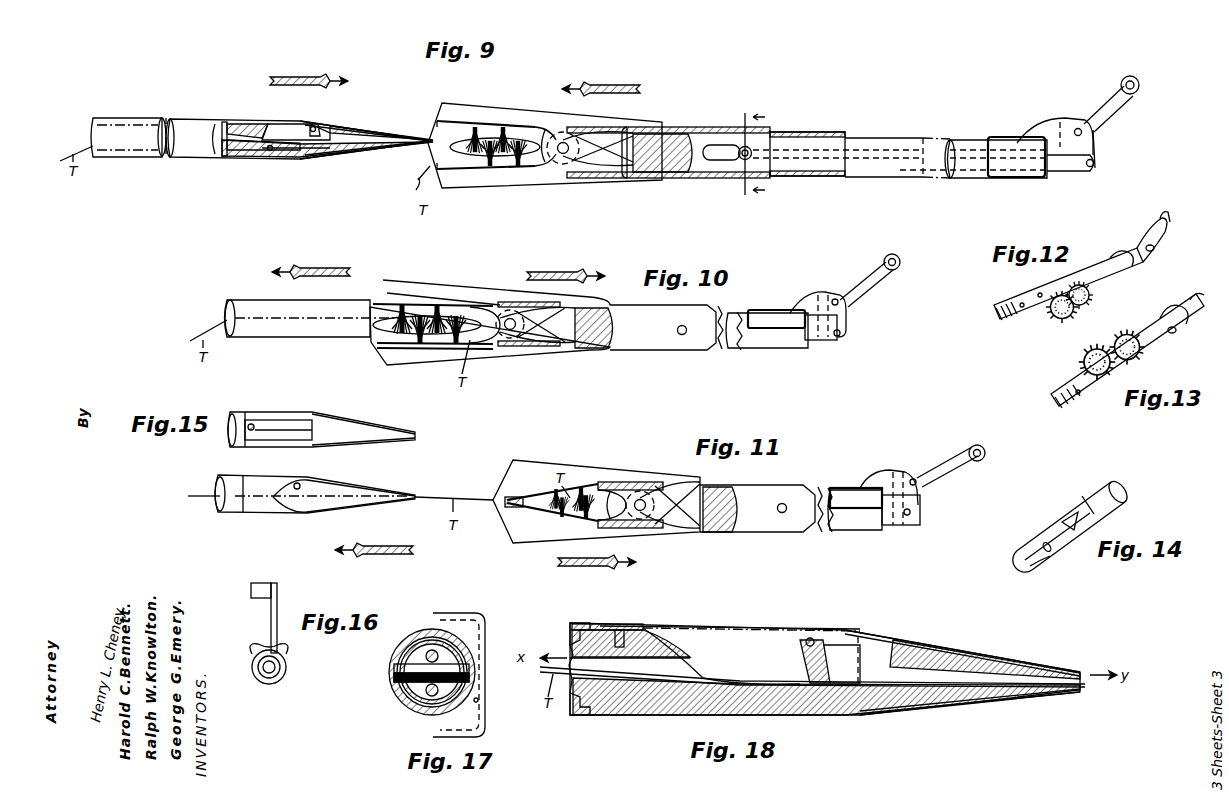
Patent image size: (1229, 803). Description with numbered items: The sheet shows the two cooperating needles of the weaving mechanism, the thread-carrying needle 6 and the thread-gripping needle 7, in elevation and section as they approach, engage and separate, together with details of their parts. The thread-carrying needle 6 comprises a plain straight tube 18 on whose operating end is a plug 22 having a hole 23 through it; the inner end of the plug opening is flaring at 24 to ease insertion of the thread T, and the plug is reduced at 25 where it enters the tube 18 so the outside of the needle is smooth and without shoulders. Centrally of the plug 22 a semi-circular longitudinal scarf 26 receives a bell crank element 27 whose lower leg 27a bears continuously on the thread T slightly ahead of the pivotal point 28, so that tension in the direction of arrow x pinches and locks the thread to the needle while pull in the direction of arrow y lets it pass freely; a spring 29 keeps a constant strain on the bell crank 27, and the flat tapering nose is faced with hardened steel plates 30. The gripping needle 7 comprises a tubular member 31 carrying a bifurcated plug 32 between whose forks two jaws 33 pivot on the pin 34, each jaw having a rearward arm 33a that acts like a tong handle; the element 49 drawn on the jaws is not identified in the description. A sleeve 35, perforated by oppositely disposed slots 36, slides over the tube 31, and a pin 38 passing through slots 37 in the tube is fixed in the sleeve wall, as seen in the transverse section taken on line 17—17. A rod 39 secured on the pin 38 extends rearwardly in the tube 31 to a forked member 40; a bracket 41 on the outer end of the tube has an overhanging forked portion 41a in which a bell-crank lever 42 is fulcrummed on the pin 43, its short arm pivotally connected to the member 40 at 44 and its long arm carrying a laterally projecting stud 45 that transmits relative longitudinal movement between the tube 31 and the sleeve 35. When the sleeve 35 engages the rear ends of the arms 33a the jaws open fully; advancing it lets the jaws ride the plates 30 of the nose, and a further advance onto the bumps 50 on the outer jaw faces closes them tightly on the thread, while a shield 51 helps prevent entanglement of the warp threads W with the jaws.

In FIG. 9, the thread-carrying needle 6 is at (179, 127).
In FIG. 9, the gripping needle 7 is at (822, 125).
In FIG. 9, the section line 17 is at (748, 154).
In FIG. 9, the plain straight tube 18 is at (140, 158).
In FIG. 10, the plain straight tube 18 is at (262, 337).
In FIG. 11, the plain straight tube 18 is at (232, 512).
In FIG. 18, the plain straight tube 18 is at (572, 716).
In FIG. 9, the plug 22 is at (292, 158).
In FIG. 11, the plug 22 is at (270, 512).
In FIG. 18, the plug 22 is at (805, 705).
In FIG. 9, the hole 23 is at (252, 125).
In FIG. 18, the hole 23 is at (650, 668).
In FIG. 9, the flaring inner end 24 is at (228, 122).
In FIG. 9, the reduced portion 25 is at (250, 152).
In FIG. 9, the longitudinal scarf 26 is at (300, 128).
In FIG. 18, the longitudinal scarf 26 is at (720, 655).
In FIG. 9, the bell crank element 27 is at (320, 130).
In FIG. 18, the bell crank element 27 is at (800, 650).
In FIG. 18, the lower leg 27a is at (812, 676).
In FIG. 11, the pivotal point 28 is at (299, 483).
In FIG. 18, the pivotal point 28 is at (814, 638).
In FIG. 9, the spring 29 is at (268, 152).
In FIG. 15, the spring 29 is at (290, 420).
In FIG. 18, the spring 29 is at (752, 628).
In FIG. 9, the hardened steel plates 30 is at (375, 127).
In FIG. 15, the hardened steel plates 30 is at (350, 426).
In FIG. 11, the hardened steel plates 30 is at (350, 483).
In FIG. 18, the hardened steel plates 30 is at (880, 634).
In FIG. 9, the tubular member 31 is at (835, 178).
In FIG. 10, the tubular member 31 is at (765, 348).
In FIG. 11, the tubular member 31 is at (745, 490).
In FIG. 16, the tubular member 31 is at (269, 684).
In FIG. 17, the tubular member 31 is at (402, 695).
In FIG. 9, the bifurcated plug 32 is at (652, 173).
In FIG. 10, the bifurcated plug 32 is at (590, 349).
In FIG. 11, the bifurcated plug 32 is at (720, 532).
In FIG. 14, the bifurcated plug 32 is at (1078, 503).
In FIG. 9, the jaws 33 is at (486, 122).
In FIG. 10, the jaws 33 is at (405, 303).
In FIG. 11, the jaws 33 is at (510, 492).
In FIG. 12, the jaws 33 is at (1003, 322).
In FIG. 13, the jaws 33 is at (1052, 401).
In FIG. 9, the arm 33a is at (622, 135).
In FIG. 10, the arm 33a is at (585, 305).
In FIG. 11, the arm 33a is at (685, 480).
In FIG. 12, the arm 33a is at (1168, 226).
In FIG. 13, the arm 33a is at (1186, 298).
In FIG. 9, the pin 34 is at (563, 154).
In FIG. 10, the pin 34 is at (510, 331).
In FIG. 11, the pin 34 is at (640, 499).
In FIG. 9, the sleeve 35 is at (605, 127).
In FIG. 10, the sleeve 35 is at (630, 351).
In FIG. 11, the sleeve 35 is at (640, 528).
In FIG. 17, the sleeve 35 is at (420, 630).
In FIG. 9, the slots 36 is at (640, 134).
In FIG. 9, the slots 37 is at (720, 178).
In FIG. 17, the slots 37 is at (396, 651).
In FIG. 9, the pin 38 is at (744, 160).
In FIG. 10, the pin 38 is at (682, 335).
In FIG. 11, the pin 38 is at (782, 513).
In FIG. 17, the pin 38 is at (478, 700).
In FIG. 9, the rod 39 is at (856, 160).
In FIG. 17, the rod 39 is at (413, 686).
In FIG. 9, the forked member 40 is at (1067, 172).
In FIG. 10, the forked member 40 is at (818, 341).
In FIG. 11, the forked member 40 is at (893, 525).
In FIG. 16, the forked member 40 is at (280, 672).
In FIG. 9, the bracket 41 is at (1000, 140).
In FIG. 10, the bracket 41 is at (765, 310).
In FIG. 11, the bracket 41 is at (868, 488).
In FIG. 16, the bracket 41 is at (288, 655).
In FIG. 9, the overhanging forked portion 41a is at (1063, 120).
In FIG. 10, the overhanging forked portion 41a is at (846, 318).
In FIG. 11, the overhanging forked portion 41a is at (920, 500).
In FIG. 9, the bell-crank lever 42 is at (1100, 129).
In FIG. 10, the bell-crank lever 42 is at (849, 306).
In FIG. 11, the bell-crank lever 42 is at (922, 489).
In FIG. 16, the bell-crank lever 42 is at (270, 630).
In FIG. 9, the pin 43 is at (1078, 128).
In FIG. 10, the pin 43 is at (833, 299).
In FIG. 11, the pin 43 is at (913, 478).
In FIG. 9, the pivotal connection 44 is at (1096, 165).
In FIG. 10, the pivotal connection 44 is at (841, 336).
In FIG. 11, the pivotal connection 44 is at (910, 515).
In FIG. 9, the stud 45 is at (1138, 92).
In FIG. 10, the stud 45 is at (899, 268).
In FIG. 11, the stud 45 is at (985, 460).
In FIG. 16, the stud 45 is at (262, 598).
In FIG. 9, the brush bristles 49 is at (465, 140).
In FIG. 10, the brush bristles 49 is at (440, 312).
In FIG. 11, the brush bristles 49 is at (555, 496).
In FIG. 12, the brush bristles 49 is at (1066, 316).
In FIG. 13, the brush bristles 49 is at (1105, 352).
In FIG. 9, the bumps 50 is at (540, 128).
In FIG. 10, the bumps 50 is at (487, 312).
In FIG. 11, the bumps 50 is at (605, 487).
In FIG. 12, the bumps 50 is at (1108, 256).
In FIG. 13, the bumps 50 is at (1170, 344).
In FIG. 9, the shield 51 is at (455, 108).
In FIG. 10, the shield 51 is at (395, 290).
In FIG. 11, the shield 51 is at (535, 465).
In FIG. 17, the shield 51 is at (478, 614).